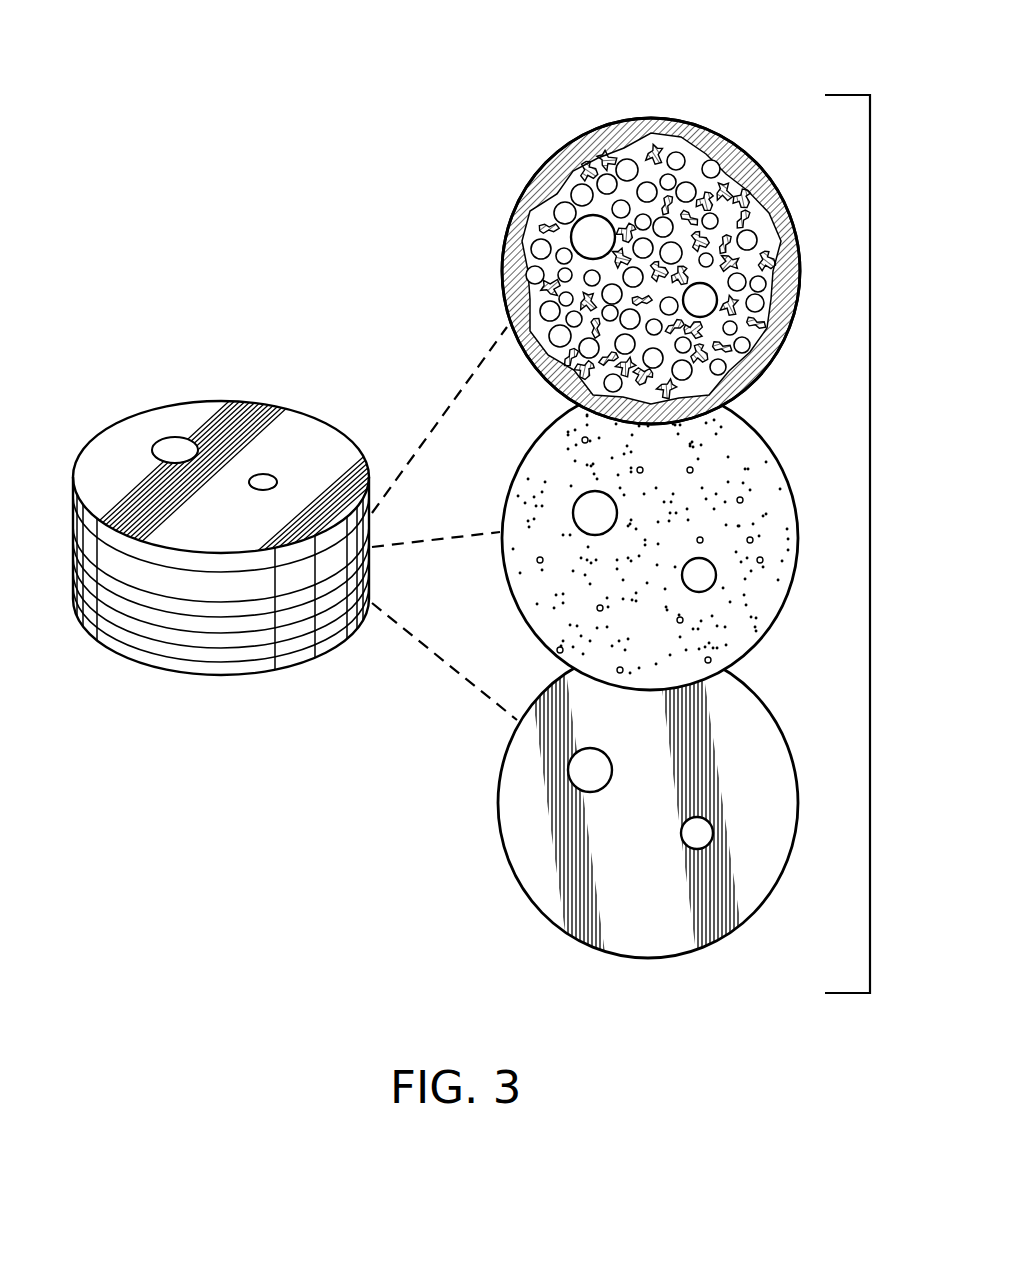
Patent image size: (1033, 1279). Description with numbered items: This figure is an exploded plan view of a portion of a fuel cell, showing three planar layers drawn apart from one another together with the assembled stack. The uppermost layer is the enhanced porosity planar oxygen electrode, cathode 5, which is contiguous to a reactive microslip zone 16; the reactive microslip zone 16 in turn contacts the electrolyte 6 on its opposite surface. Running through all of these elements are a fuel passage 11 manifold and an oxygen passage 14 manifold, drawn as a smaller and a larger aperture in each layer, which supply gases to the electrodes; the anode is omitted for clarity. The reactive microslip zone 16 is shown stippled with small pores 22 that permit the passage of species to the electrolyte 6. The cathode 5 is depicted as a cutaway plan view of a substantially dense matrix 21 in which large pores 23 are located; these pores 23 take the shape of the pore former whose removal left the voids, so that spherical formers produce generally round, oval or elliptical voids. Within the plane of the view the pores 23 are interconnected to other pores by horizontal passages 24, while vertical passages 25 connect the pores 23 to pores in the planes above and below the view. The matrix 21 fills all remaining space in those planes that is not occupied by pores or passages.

The cathode 5 is at (619, 216).
The electrolyte 6 is at (490, 812).
The fuel passage manifold 11 is at (716, 288).
The oxygen passage manifold 14 is at (573, 233).
The reactive microslip zone 16 is at (801, 470).
The matrix 21 is at (507, 243).
The small pores 22 is at (573, 558).
The large pores 23 is at (577, 142).
The horizontal passages 24 is at (637, 147).
The vertical passages 25 is at (660, 140).